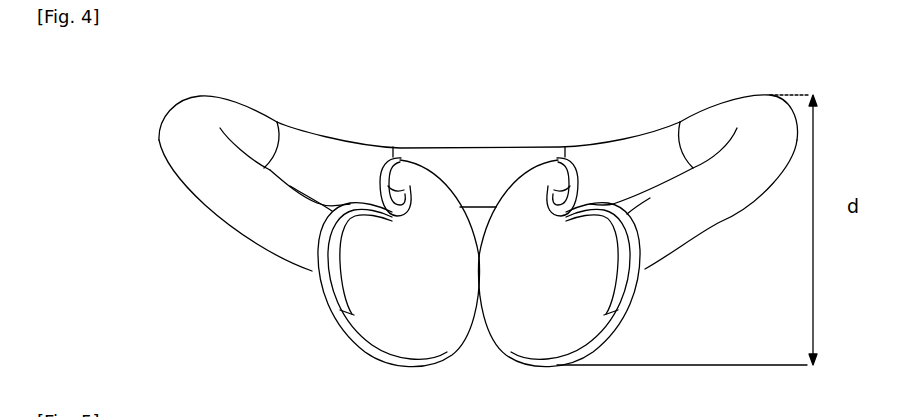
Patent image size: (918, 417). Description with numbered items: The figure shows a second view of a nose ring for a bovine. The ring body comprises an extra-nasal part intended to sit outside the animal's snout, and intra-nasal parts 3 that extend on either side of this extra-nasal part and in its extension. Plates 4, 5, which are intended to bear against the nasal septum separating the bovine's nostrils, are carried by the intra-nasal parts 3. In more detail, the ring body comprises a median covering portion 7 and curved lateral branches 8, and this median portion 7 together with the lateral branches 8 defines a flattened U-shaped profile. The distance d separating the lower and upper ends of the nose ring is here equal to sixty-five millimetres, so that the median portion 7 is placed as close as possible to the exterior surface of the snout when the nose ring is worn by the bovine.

The intra-nasal part 3 is at (285, 263).
The plate 4 is at (370, 343).
The plate 5 is at (537, 363).
The median covering portion 7 is at (477, 143).
The curved lateral branch 8 is at (160, 124).